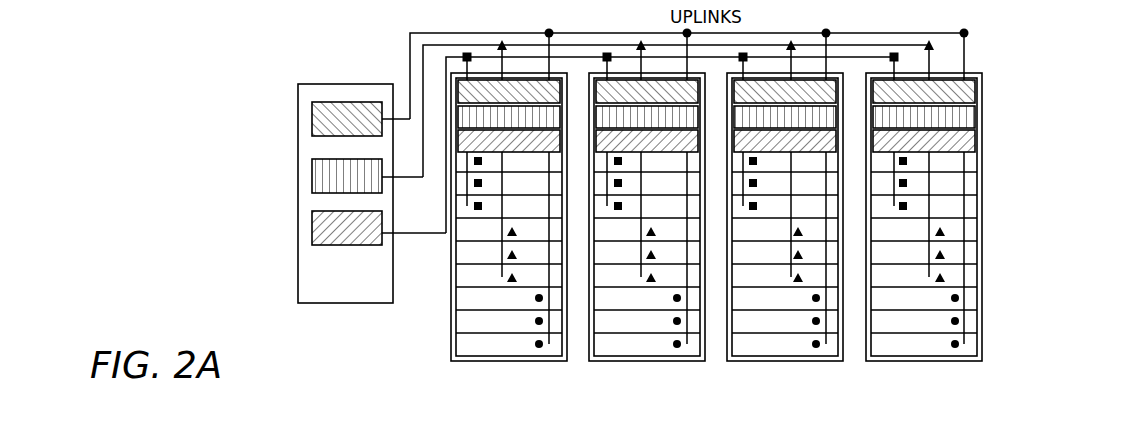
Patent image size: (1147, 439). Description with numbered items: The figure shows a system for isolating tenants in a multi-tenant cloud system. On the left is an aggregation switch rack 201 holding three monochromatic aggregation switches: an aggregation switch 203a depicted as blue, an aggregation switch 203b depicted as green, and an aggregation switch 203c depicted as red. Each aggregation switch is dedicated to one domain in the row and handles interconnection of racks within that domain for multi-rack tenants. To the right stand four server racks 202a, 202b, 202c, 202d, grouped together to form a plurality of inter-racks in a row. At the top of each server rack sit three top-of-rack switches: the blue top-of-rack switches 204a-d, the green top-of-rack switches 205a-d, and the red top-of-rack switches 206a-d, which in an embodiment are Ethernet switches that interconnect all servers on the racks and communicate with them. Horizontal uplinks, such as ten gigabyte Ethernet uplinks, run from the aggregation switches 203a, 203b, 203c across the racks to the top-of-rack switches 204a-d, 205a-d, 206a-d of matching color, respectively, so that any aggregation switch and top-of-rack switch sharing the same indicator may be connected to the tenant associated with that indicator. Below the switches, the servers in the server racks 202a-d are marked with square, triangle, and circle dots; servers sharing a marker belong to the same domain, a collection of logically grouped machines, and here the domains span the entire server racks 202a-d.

The aggregation switch rack 201 is at (347, 303).
The aggregation switch 203a is at (312, 120).
The aggregation switch 203b is at (312, 182).
The aggregation switch 203c is at (330, 246).
The server rack 202a is at (502, 361).
The server rack 202b is at (641, 361).
The server rack 202c is at (782, 361).
The server rack 202d is at (921, 361).
The top-of-rack switches 204a-d is at (992, 92).
The top-of-rack switches 205a-d is at (777, 125).
The top-of-rack switches 206a-d is at (777, 147).